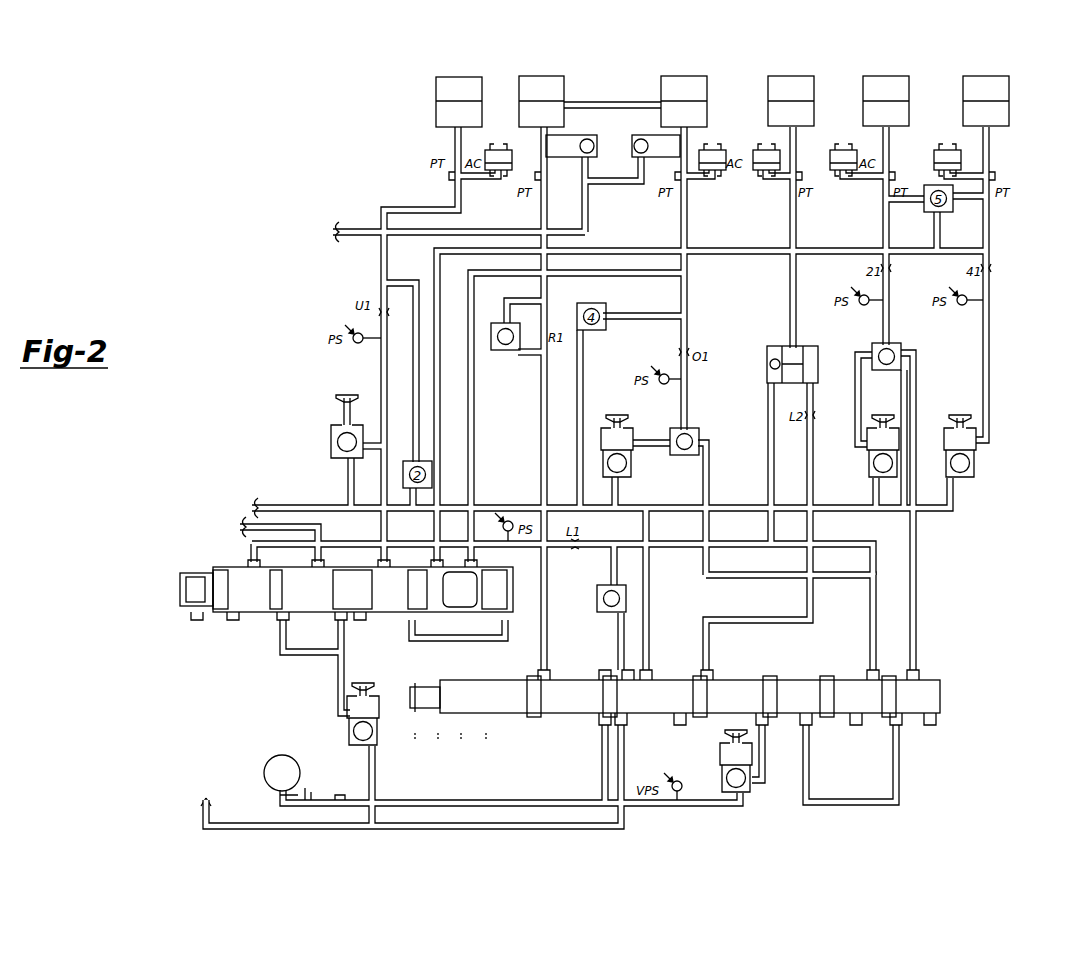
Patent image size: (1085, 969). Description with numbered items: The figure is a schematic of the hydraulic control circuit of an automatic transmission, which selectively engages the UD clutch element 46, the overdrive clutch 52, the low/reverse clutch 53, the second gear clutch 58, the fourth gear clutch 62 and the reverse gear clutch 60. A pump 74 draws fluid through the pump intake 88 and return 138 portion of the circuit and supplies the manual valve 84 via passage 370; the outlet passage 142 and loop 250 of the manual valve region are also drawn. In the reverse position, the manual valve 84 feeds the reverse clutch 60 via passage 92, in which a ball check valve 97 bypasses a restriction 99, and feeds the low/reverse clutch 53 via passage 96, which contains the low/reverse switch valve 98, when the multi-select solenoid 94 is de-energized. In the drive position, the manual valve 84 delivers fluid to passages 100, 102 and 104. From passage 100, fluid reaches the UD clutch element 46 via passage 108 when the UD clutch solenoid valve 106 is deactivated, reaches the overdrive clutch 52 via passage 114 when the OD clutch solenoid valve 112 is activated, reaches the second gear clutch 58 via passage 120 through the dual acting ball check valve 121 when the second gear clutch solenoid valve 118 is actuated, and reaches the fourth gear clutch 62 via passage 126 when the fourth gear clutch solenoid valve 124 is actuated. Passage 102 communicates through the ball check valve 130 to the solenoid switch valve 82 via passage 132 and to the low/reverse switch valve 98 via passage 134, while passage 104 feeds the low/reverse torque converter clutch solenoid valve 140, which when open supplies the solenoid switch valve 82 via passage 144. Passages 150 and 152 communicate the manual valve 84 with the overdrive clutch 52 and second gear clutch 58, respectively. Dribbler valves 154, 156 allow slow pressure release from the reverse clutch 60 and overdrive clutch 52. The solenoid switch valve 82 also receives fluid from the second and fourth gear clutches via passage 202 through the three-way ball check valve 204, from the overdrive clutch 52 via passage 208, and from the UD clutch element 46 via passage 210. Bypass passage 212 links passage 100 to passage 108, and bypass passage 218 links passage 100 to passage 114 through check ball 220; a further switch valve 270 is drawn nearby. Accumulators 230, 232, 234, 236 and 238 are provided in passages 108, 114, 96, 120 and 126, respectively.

The UD clutch element 46 is at (436, 86).
The accumulator 230 is at (503, 148).
The reverse gear clutch 60 is at (564, 90).
The dribbler valve 156 is at (645, 135).
The dribbler valve 154 is at (590, 135).
The overdrive clutch 52 is at (707, 92).
The low/reverse clutch 53 is at (814, 92).
The second gear clutch 58 is at (909, 92).
The fourth gear clutch 62 is at (1009, 92).
The passage 108 is at (390, 207).
The bypass passage 212 is at (403, 278).
The passage 202 is at (597, 250).
The accumulator 232 is at (710, 148).
The accumulator 234 is at (760, 178).
The passage 114 is at (690, 224).
The accumulator 236 is at (835, 148).
The accumulator 238 is at (945, 148).
The three-way ball check valve 204 is at (962, 198).
The passage 126 is at (992, 235).
The passage 120 is at (883, 224).
The passage 96 is at (790, 268).
The check ball 220 is at (605, 310).
The ball check valve 97 is at (500, 350).
The restriction 99 is at (547, 353).
The OD clutch solenoid valve 112 is at (601, 452).
The low/reverse switch valve 98 is at (818, 352).
The dual acting ball check valve 121 is at (901, 352).
The UD clutch solenoid valve 106 is at (331, 446).
The passage 210 is at (390, 455).
The passage 208 is at (476, 450).
The bypass passage 218 is at (575, 470).
The switch valve 6 270 is at (697, 428).
The passage 134 is at (768, 485).
The second gear (2C) clutch solenoid valve 118 is at (869, 470).
The fourth gear (4C) clutch solenoid valve 124 is at (975, 464).
The passage 132 is at (250, 543).
The passage 92 is at (548, 555).
The passage 100 is at (650, 567).
The passage 150 is at (845, 573).
The passage 152 is at (918, 567).
The solenoid switch valve 82 is at (362, 592).
The passage 144 is at (280, 640).
The ball check valve 130 is at (597, 608).
The passage 102 is at (630, 625).
The pump 74 is at (264, 773).
The low/reverse torque converter clutch solenoid valve 140 is at (349, 731).
The pump output line 142 is at (378, 785).
The manual valve 84 is at (750, 698).
The manual valve loop line 250 is at (897, 765).
The sump return line 138 is at (262, 830).
The filter 88 is at (297, 800).
The passage 370 is at (443, 828).
The passage 104 is at (500, 830).
The multi-select solenoid 94 is at (722, 792).